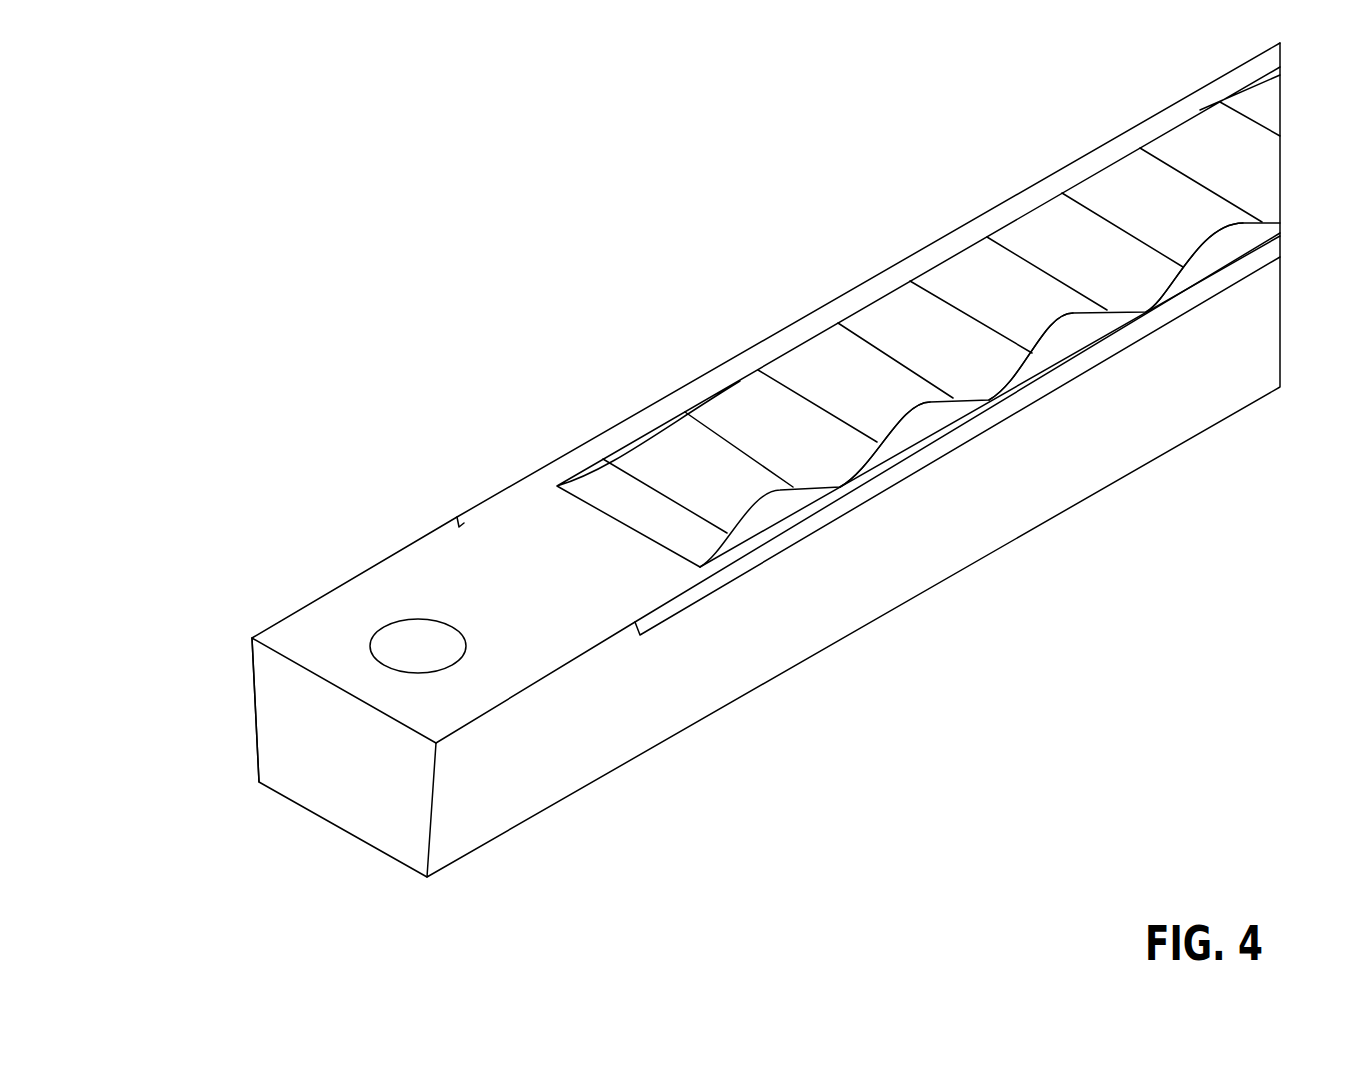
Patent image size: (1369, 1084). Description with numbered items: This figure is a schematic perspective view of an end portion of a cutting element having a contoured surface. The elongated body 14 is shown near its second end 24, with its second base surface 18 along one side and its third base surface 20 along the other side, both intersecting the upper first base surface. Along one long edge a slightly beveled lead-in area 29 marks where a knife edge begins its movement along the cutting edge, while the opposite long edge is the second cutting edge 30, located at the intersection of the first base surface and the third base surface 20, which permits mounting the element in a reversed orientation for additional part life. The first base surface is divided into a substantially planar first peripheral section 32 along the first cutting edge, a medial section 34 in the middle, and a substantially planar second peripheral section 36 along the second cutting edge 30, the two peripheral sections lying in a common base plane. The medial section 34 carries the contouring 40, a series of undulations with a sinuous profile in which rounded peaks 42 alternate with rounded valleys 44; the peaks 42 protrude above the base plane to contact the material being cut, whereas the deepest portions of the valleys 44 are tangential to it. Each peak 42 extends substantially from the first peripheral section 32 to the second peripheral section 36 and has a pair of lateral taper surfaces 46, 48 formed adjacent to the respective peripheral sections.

The body 14 is at (573, 730).
The second base surface 18 is at (466, 793).
The third base surface 20 is at (255, 723).
The second end 24 is at (255, 597).
The lead-in area 29 is at (497, 496).
The second cutting edge 30 is at (592, 445).
The first peripheral section 32 is at (770, 542).
The medial section 34 is at (652, 430).
The second peripheral section 36 is at (697, 390).
The contouring 40 is at (912, 331).
The peaks 42 is at (1017, 302).
The valleys 44 is at (1103, 277).
The lateral taper surface 46 is at (917, 427).
The lateral taper surface 48 is at (792, 352).